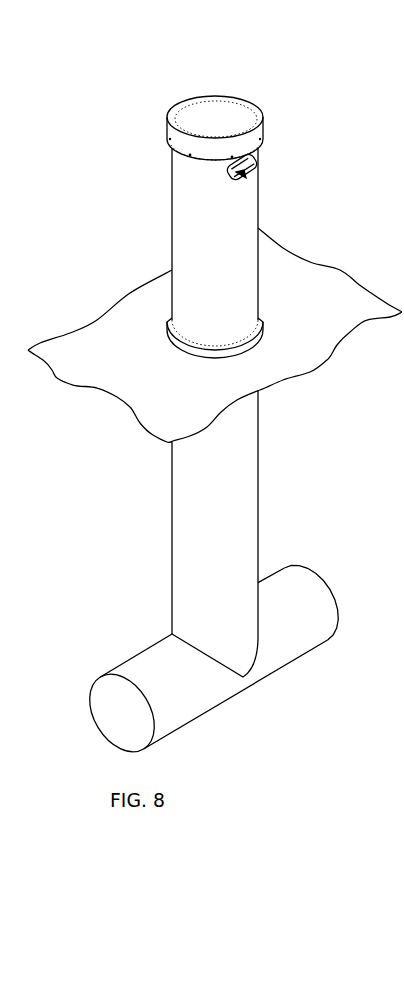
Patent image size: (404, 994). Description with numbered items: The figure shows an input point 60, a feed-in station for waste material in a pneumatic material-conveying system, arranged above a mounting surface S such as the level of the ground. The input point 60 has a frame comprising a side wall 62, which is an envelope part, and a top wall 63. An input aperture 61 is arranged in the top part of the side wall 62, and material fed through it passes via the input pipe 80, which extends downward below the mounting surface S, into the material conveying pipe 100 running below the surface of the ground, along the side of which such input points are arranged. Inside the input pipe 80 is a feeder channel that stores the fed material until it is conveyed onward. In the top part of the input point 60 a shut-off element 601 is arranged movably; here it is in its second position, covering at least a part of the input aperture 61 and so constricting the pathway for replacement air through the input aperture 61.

The input point 60 is at (148, 152).
The input aperture 61 is at (242, 175).
The side wall 62 is at (182, 260).
The top wall 63 is at (215, 102).
The shut-off element 601 is at (257, 157).
The mounting surface S is at (113, 332).
The input pipe 80 is at (175, 500).
The material conveying pipe 100 is at (302, 605).